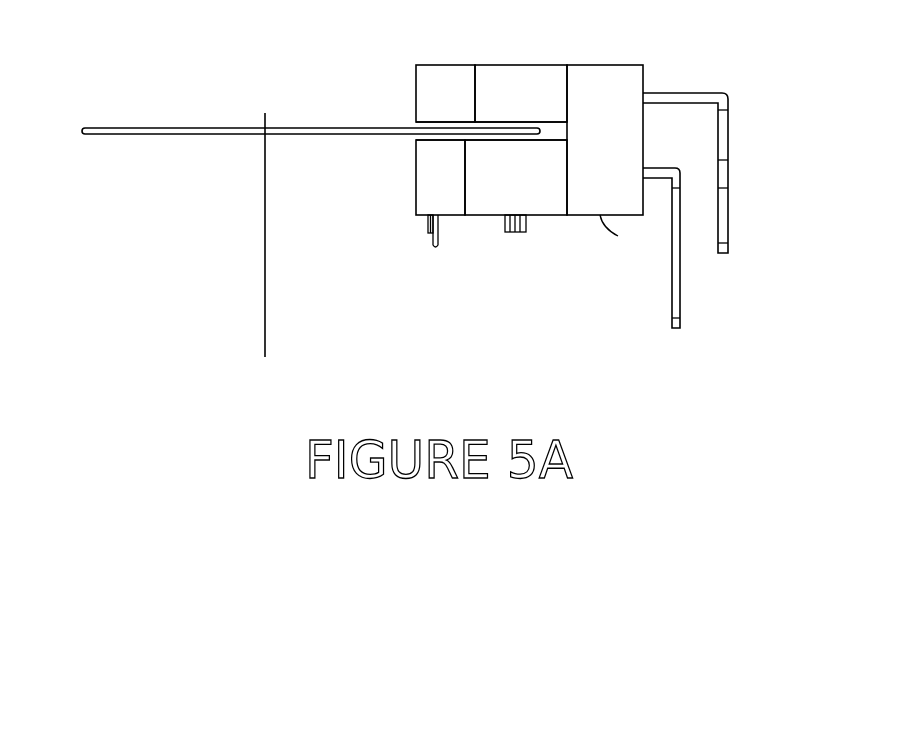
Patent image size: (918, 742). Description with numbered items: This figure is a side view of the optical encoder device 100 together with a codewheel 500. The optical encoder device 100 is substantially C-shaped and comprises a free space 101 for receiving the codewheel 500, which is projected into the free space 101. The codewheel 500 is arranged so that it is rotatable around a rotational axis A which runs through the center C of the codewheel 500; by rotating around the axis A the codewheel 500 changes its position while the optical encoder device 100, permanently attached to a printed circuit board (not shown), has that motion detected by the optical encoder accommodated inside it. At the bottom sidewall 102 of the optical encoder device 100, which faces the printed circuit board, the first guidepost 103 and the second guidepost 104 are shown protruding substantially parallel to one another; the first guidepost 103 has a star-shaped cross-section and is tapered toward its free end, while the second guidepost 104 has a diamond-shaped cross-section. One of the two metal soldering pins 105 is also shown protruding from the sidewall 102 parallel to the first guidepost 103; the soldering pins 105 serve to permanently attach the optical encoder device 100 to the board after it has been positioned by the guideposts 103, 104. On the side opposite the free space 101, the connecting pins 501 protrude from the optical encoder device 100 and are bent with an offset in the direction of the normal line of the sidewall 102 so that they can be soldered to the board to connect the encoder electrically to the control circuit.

The codewheel 500 is at (113, 128).
The rotational axis A is at (265, 263).
The center of the codewheel C is at (270, 126).
The optical encoder device 100 is at (607, 82).
The free space 101 is at (553, 132).
The bottom sidewall 102 is at (628, 246).
The first guidepost 103 is at (526, 224).
The second guidepost 104 is at (427, 229).
The soldering pins 105 is at (438, 236).
The connecting pins 501 is at (723, 253).